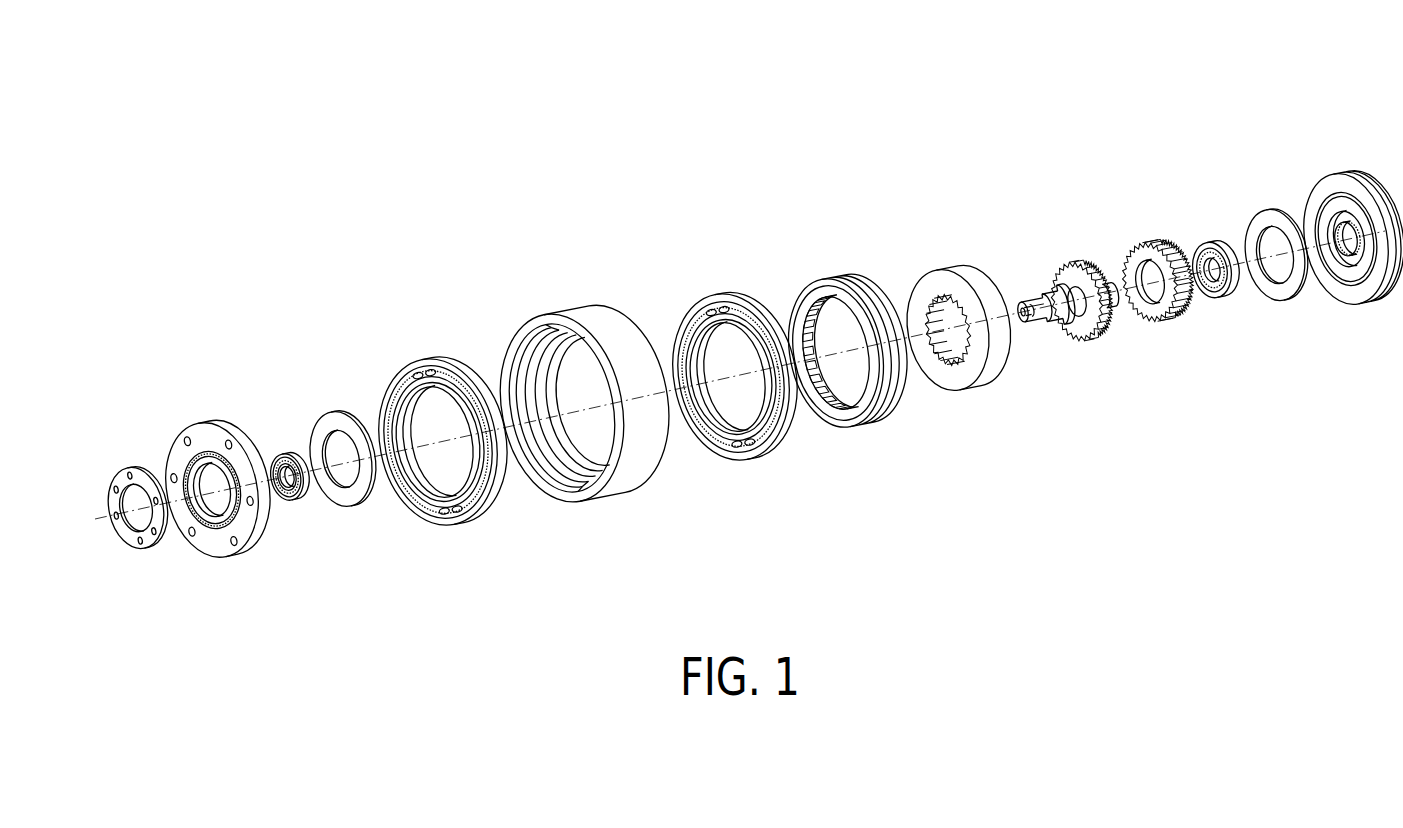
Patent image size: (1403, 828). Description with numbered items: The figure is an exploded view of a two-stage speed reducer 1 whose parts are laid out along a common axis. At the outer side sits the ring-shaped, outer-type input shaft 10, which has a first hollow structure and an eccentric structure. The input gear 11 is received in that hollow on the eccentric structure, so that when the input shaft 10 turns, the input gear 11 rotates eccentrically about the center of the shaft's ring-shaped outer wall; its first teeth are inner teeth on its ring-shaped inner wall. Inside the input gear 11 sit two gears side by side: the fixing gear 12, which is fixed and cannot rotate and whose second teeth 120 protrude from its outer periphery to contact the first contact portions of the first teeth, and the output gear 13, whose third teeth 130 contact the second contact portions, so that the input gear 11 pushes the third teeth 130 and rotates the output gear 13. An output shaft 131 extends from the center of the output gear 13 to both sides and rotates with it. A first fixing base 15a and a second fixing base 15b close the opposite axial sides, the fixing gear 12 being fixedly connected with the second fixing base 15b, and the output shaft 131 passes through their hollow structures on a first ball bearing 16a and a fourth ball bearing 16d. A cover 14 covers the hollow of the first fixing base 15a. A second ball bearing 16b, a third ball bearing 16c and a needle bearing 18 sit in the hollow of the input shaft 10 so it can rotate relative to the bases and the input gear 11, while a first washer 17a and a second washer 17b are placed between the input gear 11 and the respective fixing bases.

The speed reducer 1 is at (163, 83).
The input shaft 10 is at (584, 320).
The input gear 11 is at (966, 270).
The fixing gear 12 is at (1156, 254).
The second teeth 120 is at (1175, 262).
The output gear 13 is at (1068, 268).
The third teeth 130 is at (1097, 272).
The output shaft 131 is at (1052, 304).
The cover 14 is at (128, 478).
The first fixing base 15a is at (192, 428).
The second fixing base 15b is at (1360, 187).
The first ball bearing 16a is at (283, 458).
The second ball bearing 16b is at (436, 362).
The third ball bearing 16c is at (735, 300).
The fourth ball bearing 16d is at (1213, 245).
The first washer 17a is at (330, 430).
The second washer 17b is at (1266, 224).
The needle bearing 18 is at (838, 280).